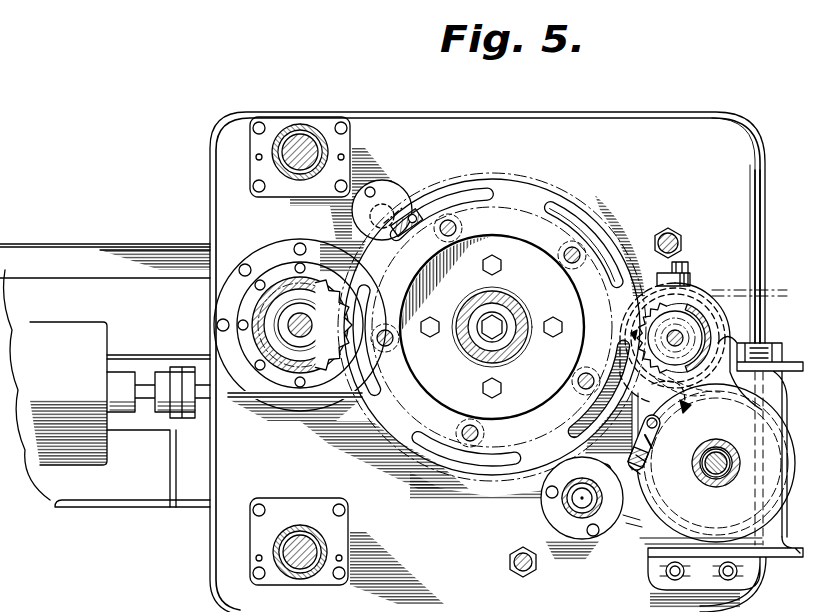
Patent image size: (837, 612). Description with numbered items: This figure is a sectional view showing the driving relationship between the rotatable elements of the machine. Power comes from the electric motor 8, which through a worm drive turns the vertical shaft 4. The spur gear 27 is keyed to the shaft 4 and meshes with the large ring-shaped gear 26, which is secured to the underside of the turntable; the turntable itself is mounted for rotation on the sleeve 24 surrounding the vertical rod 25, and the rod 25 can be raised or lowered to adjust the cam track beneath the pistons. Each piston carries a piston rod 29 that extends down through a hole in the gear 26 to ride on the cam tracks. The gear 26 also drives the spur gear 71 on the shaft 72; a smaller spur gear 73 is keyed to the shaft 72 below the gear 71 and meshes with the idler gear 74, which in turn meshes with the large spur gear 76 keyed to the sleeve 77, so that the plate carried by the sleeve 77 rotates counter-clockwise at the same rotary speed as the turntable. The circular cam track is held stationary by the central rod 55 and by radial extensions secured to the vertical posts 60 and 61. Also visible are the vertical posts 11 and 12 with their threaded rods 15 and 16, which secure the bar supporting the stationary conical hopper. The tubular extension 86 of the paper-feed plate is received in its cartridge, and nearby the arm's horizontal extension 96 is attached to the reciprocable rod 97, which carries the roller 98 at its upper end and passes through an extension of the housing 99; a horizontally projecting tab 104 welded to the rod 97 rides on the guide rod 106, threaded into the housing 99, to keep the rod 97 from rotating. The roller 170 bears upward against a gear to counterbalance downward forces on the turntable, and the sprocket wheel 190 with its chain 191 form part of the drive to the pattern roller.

The vertical shaft 4 is at (303, 322).
The electric motor 8 is at (72, 330).
The vertical post 11 is at (302, 522).
The vertical post 12 is at (308, 127).
The threaded rod 15 is at (302, 570).
The threaded rod 16 is at (292, 142).
The sleeve 24 is at (506, 318).
The vertical rod 25 is at (508, 348).
The ring-shaped gear 26 is at (586, 216).
The spur gear 27 is at (293, 352).
The piston rod 29 is at (458, 226).
The rod 55 is at (716, 476).
The vertical post 60 is at (513, 567).
The vertical post 61 is at (671, 232).
The spur gear 71 is at (690, 308).
The shaft 72 is at (681, 337).
The smaller spur gear 73 is at (708, 378).
The idler gear 74 is at (666, 392).
The large spur gear 76 is at (776, 462).
The sleeve 77 is at (718, 450).
The tubular extension 86 is at (566, 499).
The horizontal extension 96 is at (642, 470).
The reciprocable rod 97 is at (646, 458).
The roller 98 is at (640, 452).
The housing 99 is at (655, 528).
The horizontally projecting tab 104 is at (650, 440).
The guide rod 106 is at (658, 424).
The roller 170 is at (398, 200).
The sprocket wheel 190 is at (684, 273).
The chain 191 is at (766, 292).